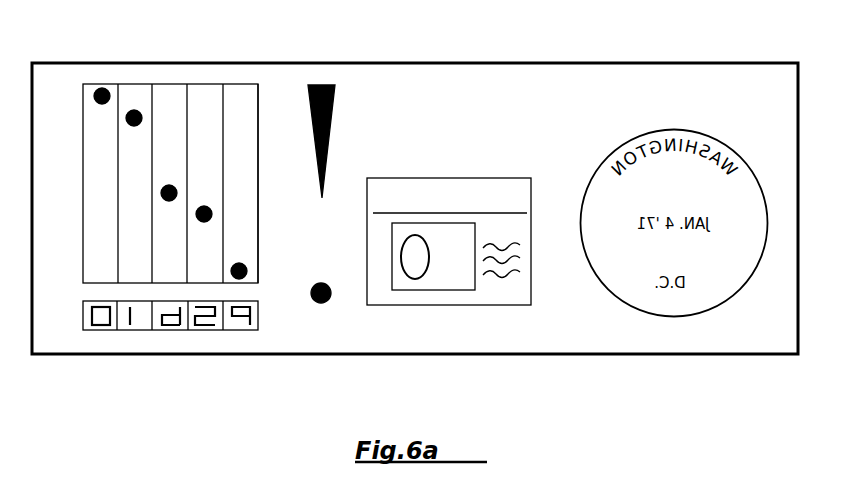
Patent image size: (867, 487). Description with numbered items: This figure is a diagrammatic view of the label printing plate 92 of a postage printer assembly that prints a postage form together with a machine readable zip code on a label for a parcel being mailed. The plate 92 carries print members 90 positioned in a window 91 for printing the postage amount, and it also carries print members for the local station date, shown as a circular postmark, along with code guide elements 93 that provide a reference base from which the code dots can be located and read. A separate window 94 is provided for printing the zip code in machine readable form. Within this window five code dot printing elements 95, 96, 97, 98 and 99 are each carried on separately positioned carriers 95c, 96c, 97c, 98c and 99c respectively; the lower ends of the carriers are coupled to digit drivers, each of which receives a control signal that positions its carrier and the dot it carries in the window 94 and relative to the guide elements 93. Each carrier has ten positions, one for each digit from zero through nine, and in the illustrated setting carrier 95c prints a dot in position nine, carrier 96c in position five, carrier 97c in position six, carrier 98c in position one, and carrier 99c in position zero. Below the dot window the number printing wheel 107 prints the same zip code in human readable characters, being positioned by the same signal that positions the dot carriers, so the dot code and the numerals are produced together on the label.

The label printing plate 92 is at (478, 63).
The window 94 is at (83, 245).
The carrier 99c is at (87, 84).
The carrier 98c is at (130, 84).
The carrier 97c is at (170, 86).
The carrier 96c is at (198, 84).
The carrier 95c is at (230, 84).
The code dot printing element 99 is at (94, 97).
The code dot printing element 98 is at (126, 118).
The code dot printing element 97 is at (161, 193).
The code dot printing element 96 is at (212, 214).
The code dot printing element 95 is at (247, 270).
The number printing wheel 107 is at (128, 331).
The code guide elements 93 is at (335, 100).
The print members 90 is at (425, 290).
The window 91 is at (465, 290).